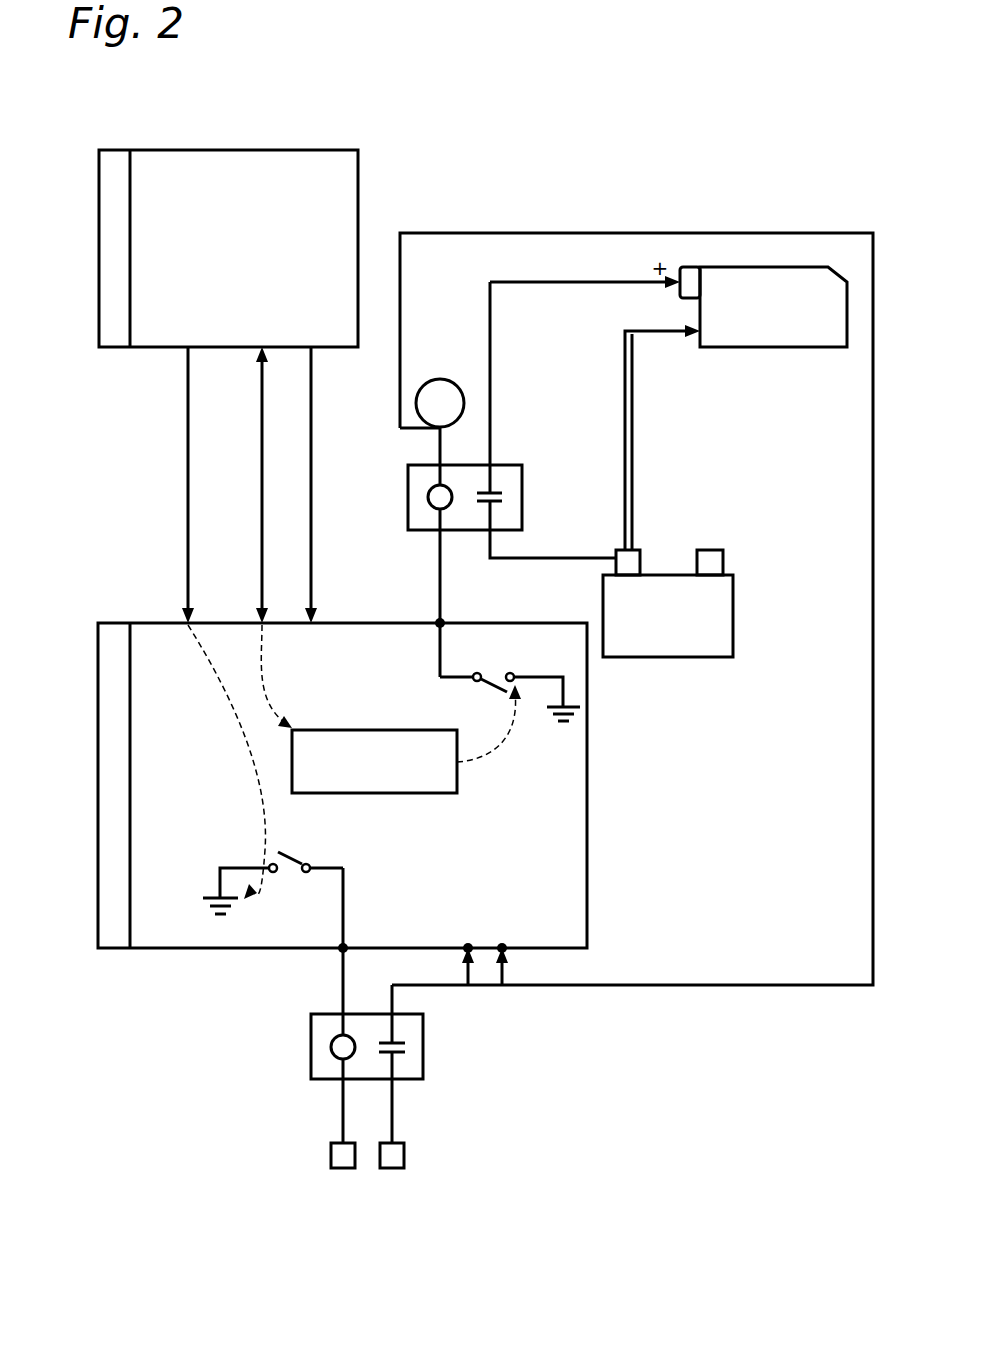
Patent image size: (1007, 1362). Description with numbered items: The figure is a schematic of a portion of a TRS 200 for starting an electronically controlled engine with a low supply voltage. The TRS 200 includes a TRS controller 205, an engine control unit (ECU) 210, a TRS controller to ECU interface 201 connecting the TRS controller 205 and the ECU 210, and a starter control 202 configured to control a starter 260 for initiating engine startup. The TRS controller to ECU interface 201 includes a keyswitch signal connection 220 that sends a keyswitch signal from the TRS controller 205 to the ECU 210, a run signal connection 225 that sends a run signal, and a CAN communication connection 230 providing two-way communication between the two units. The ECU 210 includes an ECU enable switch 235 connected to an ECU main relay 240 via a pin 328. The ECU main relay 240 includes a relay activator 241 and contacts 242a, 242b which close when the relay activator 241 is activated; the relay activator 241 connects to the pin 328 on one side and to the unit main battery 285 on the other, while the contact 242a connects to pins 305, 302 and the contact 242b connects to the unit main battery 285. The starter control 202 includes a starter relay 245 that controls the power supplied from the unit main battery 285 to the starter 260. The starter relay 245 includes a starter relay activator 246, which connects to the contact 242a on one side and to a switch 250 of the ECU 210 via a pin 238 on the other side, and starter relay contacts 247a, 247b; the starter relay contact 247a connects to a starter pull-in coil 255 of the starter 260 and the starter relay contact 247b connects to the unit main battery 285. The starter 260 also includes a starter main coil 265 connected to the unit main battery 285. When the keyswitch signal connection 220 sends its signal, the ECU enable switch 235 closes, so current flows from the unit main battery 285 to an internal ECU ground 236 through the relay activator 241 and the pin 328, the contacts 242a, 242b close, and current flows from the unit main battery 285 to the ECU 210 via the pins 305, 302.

The TRS 200 is at (691, 103).
The TRS controller to ECU interface 201 is at (132, 487).
The starter control 202 is at (512, 405).
The TRS controller 205 is at (202, 150).
The engine control unit (ECU) 210 is at (118, 623).
The keyswitch signal connection 220 is at (188, 408).
The run signal connection 225 is at (311, 422).
The CAN communication connection 230 is at (262, 443).
The ECU enable switch 235 is at (295, 858).
The internal ECU ground 236 is at (210, 898).
The pin 238 is at (443, 620).
The ECU main relay 240 is at (371, 1064).
The relay activator 241 is at (333, 1040).
The contact 242a is at (397, 1043).
The contact 242b is at (400, 1052).
The starter relay 245 is at (476, 482).
The starter relay activator 246 is at (433, 506).
The starter relay contact 247a is at (497, 492).
The starter relay contact 247b is at (505, 503).
The switch 250 is at (493, 672).
The starter pull-in coil 255 is at (692, 267).
The starter 260 is at (757, 267).
The starter main coil 265 is at (713, 337).
The unit main battery 285 is at (690, 657).
The pin 302 is at (504, 945).
The pin 305 is at (466, 945).
The pin 328 is at (340, 945).